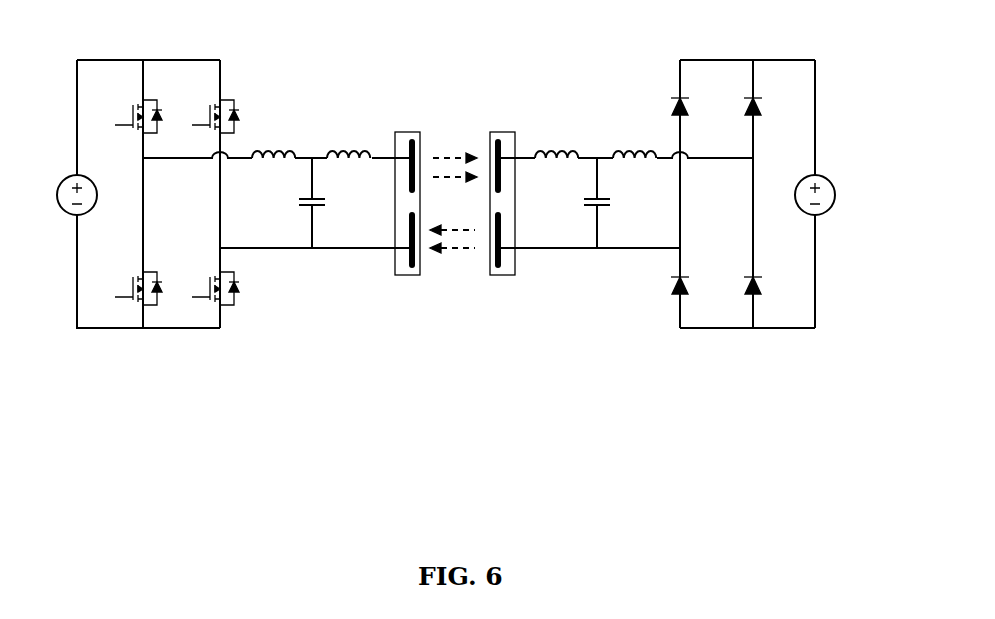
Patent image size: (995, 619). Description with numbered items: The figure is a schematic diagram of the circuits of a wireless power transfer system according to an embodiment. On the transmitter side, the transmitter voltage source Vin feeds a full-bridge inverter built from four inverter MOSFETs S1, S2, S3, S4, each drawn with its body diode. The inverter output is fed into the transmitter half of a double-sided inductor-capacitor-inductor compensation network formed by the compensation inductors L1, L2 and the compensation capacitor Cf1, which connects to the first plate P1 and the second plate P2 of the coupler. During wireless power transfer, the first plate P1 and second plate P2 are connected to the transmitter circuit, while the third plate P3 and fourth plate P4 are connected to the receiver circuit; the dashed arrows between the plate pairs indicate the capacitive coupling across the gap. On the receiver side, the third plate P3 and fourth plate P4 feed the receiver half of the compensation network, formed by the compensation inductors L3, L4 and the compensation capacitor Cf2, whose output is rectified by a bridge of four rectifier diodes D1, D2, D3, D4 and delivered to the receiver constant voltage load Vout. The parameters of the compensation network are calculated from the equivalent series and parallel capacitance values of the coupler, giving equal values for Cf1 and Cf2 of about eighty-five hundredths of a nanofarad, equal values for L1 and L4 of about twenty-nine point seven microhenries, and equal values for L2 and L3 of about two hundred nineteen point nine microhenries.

The inverter MOSFET S1 is at (132, 108).
The inverter MOSFET S2 is at (211, 108).
The inverter MOSFET S3 is at (132, 280).
The inverter MOSFET S4 is at (211, 280).
The compensation inductor L1 is at (273, 140).
The compensation inductor L2 is at (348, 140).
The compensation inductor L3 is at (556, 140).
The compensation inductor L4 is at (634, 140).
The compensation capacitor Cf1 is at (292, 203).
The compensation capacitor Cf2 is at (615, 203).
The first plate P1 is at (412, 153).
The second plate P2 is at (412, 257).
The third plate P3 is at (498, 153).
The fourth plate P4 is at (498, 257).
The rectifier diode D1 is at (694, 100).
The rectifier diode D2 is at (767, 100).
The rectifier diode D3 is at (694, 279).
The rectifier diode D4 is at (767, 279).
The transmitter voltage source Vin is at (64, 181).
The receiver constant voltage load Vout is at (830, 179).